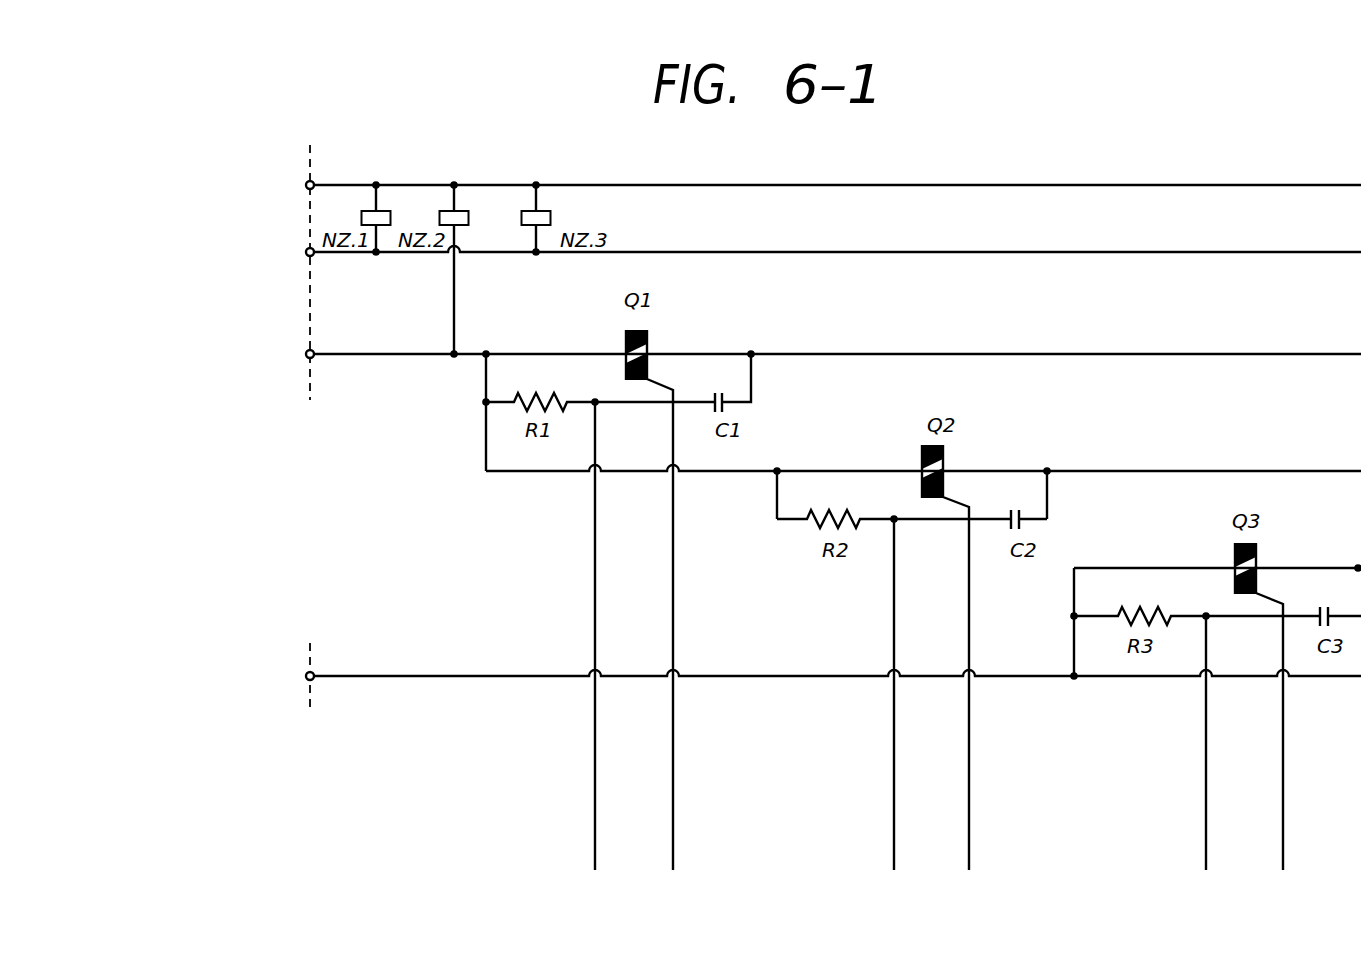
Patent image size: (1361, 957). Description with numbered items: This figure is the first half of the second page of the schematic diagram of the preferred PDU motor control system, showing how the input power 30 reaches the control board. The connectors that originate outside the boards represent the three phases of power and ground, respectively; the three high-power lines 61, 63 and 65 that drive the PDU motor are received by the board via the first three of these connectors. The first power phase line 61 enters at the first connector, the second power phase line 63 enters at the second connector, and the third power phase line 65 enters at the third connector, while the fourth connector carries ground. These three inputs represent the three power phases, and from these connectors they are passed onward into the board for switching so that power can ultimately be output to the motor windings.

The three-phase input power (200V, 400 Hz) 30 is at (168, 695).
The first power phase line 61 is at (353, 252).
The second power phase line 63 is at (357, 354).
The third power phase line 65 is at (390, 676).